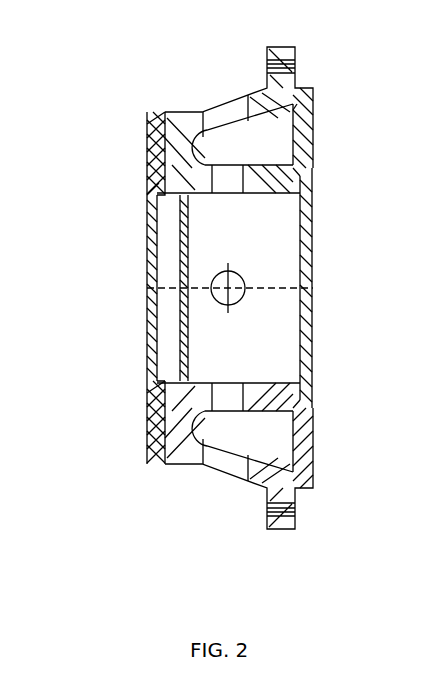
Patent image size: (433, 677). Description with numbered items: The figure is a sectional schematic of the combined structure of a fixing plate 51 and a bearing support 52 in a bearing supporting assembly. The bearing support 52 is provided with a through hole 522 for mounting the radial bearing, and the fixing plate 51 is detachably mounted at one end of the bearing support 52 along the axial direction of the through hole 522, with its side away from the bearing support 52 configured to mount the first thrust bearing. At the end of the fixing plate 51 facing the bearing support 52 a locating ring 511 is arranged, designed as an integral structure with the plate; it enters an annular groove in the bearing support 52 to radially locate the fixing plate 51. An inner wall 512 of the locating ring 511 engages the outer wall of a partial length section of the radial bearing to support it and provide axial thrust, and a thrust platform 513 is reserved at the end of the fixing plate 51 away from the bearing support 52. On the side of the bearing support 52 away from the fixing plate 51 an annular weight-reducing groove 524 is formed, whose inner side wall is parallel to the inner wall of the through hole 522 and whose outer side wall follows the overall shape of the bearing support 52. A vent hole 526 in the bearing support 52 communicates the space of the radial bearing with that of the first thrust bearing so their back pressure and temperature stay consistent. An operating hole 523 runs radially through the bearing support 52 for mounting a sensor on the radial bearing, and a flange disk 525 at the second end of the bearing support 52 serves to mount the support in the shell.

The fixing plate 51 is at (105, 369).
The locating ring 511 is at (180, 186).
The inner wall 512 is at (155, 380).
The thrust platform 513 is at (147, 205).
The bearing support 52 is at (267, 473).
The through hole 522 is at (262, 329).
The operating hole 523 is at (275, 108).
The weight-reducing groove 524 is at (278, 143).
The flange disk 525 is at (287, 53).
The vent hole 526 is at (233, 281).